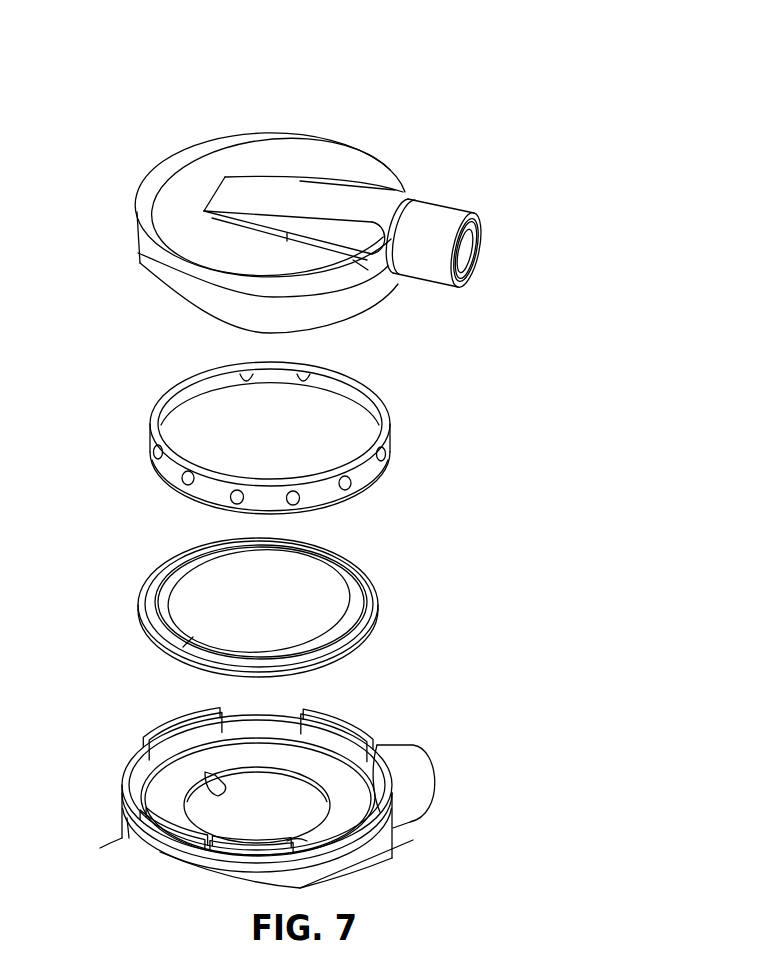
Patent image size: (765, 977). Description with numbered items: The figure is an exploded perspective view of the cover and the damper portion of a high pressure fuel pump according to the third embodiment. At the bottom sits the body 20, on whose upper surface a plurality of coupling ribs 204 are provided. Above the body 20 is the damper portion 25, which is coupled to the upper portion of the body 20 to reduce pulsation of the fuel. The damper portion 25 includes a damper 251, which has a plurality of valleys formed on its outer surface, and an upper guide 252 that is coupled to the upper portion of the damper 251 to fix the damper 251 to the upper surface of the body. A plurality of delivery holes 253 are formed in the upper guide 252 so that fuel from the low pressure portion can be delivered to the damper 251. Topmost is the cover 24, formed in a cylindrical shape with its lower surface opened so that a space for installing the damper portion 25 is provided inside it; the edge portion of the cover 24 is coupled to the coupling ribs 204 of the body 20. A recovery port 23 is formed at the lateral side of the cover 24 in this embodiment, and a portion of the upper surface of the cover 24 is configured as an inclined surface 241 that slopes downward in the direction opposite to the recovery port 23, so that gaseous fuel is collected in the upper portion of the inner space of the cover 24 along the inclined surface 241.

The body 20 is at (318, 798).
The coupling ribs 204 is at (372, 777).
The recovery port 23 is at (445, 203).
The cover 24 is at (257, 129).
The inclined surface 241 is at (332, 203).
The damper portion 25 is at (334, 519).
The damper 251 is at (376, 589).
The upper guide 252 is at (377, 433).
The delivery holes 253 is at (352, 500).